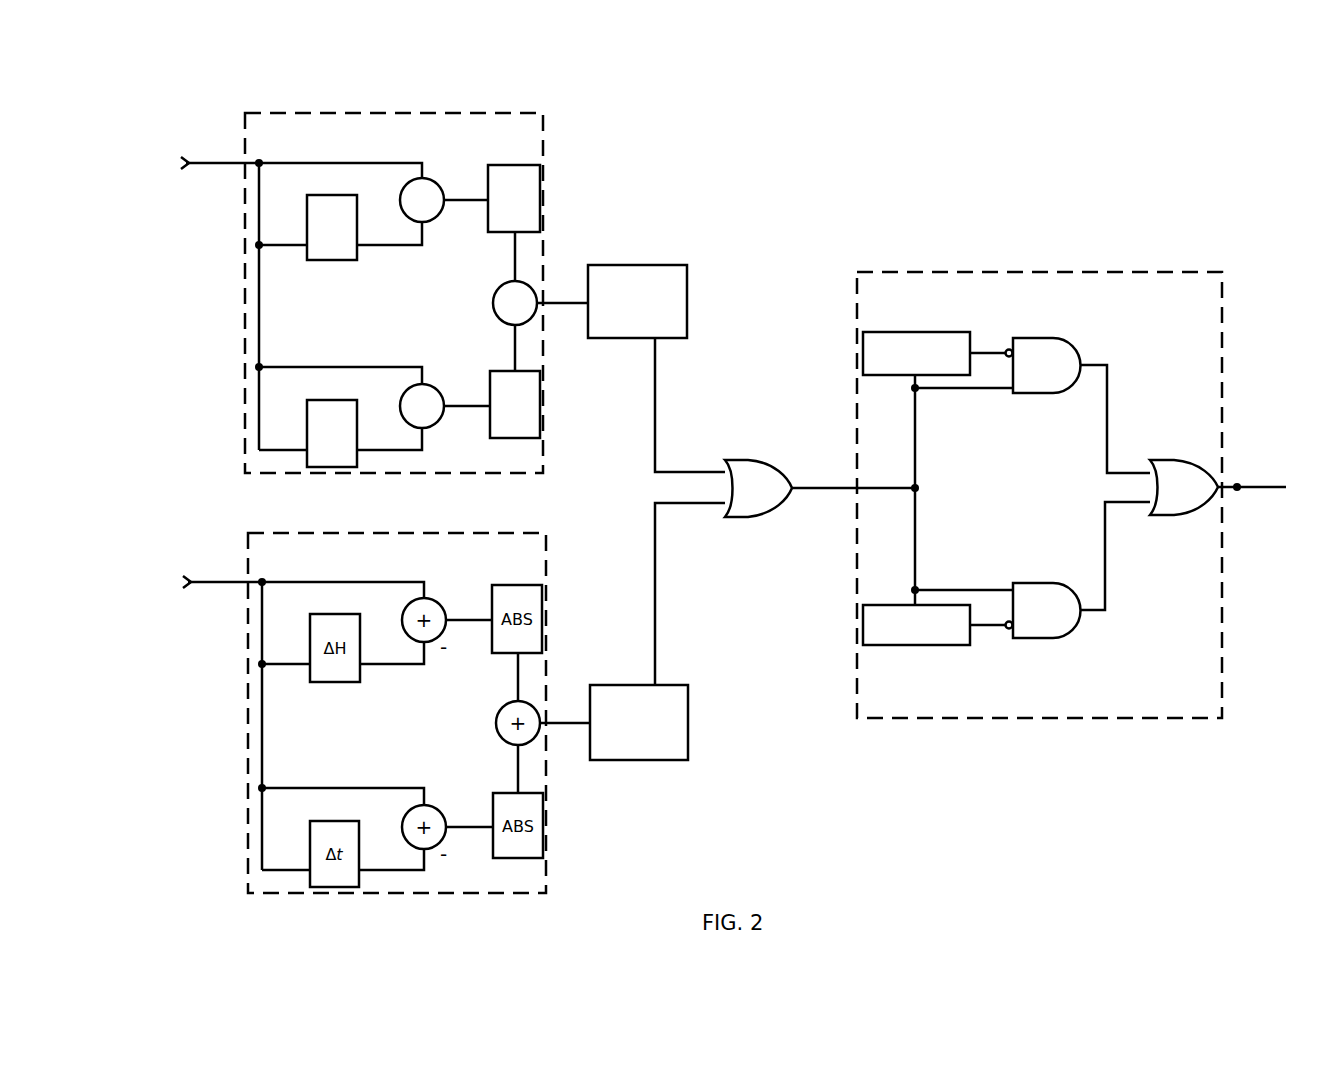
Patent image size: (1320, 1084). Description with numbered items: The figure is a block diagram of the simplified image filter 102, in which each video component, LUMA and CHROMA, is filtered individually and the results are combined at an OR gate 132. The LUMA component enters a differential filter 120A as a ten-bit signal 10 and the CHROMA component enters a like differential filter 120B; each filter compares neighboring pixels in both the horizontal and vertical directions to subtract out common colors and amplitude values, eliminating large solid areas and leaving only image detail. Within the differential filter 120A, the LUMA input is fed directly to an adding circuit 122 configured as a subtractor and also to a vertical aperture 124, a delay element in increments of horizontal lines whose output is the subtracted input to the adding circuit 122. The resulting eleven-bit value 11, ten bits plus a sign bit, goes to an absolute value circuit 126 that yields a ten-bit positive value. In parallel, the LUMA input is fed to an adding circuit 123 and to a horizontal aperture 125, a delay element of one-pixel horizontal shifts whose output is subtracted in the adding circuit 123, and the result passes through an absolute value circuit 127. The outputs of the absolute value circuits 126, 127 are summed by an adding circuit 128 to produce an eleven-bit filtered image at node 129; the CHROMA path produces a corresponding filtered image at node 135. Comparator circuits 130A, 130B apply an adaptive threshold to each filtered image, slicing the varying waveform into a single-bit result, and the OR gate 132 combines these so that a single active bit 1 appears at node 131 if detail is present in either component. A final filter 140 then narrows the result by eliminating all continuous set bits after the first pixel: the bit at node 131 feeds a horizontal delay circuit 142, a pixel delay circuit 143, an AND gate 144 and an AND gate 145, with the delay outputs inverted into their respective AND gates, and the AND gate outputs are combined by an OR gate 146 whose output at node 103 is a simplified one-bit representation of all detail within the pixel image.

The single bit 1 is at (803, 493).
The 10-bit value 10 is at (211, 168).
The 11-bit value 11 is at (461, 205).
The simplified image filter 102 is at (798, 170).
The node 103 is at (1237, 491).
The differential filter 120A is at (545, 420).
The differential filter 120B is at (546, 840).
The adding circuit 122 is at (437, 186).
The adding circuit 123 is at (437, 392).
The vertical aperture 124 is at (332, 227).
The horizontal aperture 125 is at (332, 433).
The absolute value circuit 126 is at (514, 198).
The absolute value circuit 127 is at (515, 404).
The adding circuit 128 is at (531, 288).
The node 129 is at (566, 306).
The comparator circuit 130A is at (656, 368).
The comparator circuit 130B is at (657, 631).
The node 131 is at (920, 487).
The OR gate 132 is at (753, 462).
The node 135 is at (568, 726).
The final filter 140 is at (955, 718).
The horizontal delay circuit 142 is at (917, 332).
The pixel delay circuit 143 is at (922, 645).
The AND gate 144 is at (1050, 338).
The AND gate 145 is at (1080, 620).
The OR gate 146 is at (1183, 461).